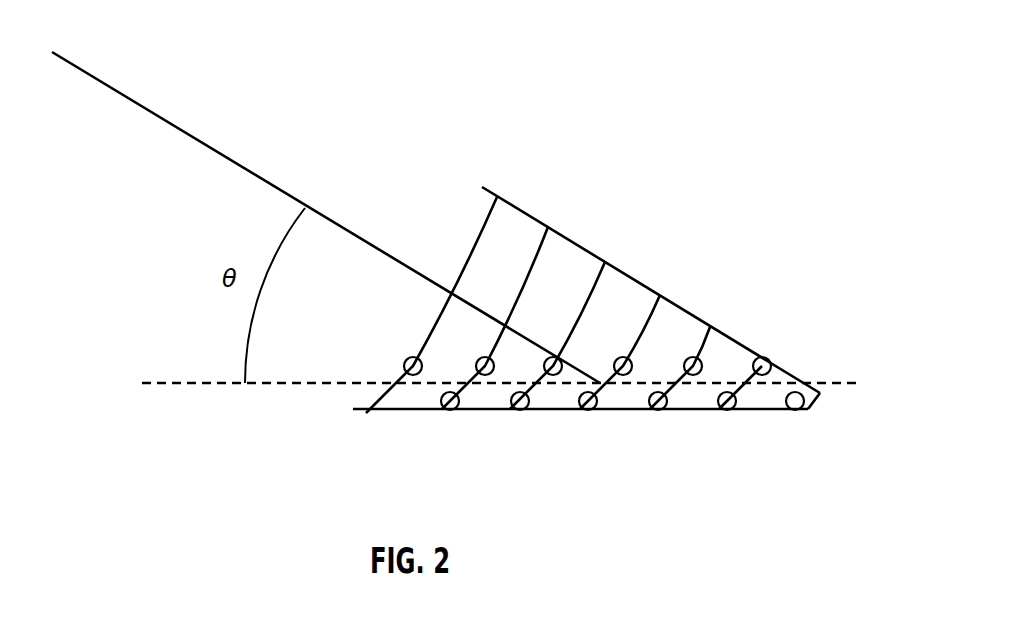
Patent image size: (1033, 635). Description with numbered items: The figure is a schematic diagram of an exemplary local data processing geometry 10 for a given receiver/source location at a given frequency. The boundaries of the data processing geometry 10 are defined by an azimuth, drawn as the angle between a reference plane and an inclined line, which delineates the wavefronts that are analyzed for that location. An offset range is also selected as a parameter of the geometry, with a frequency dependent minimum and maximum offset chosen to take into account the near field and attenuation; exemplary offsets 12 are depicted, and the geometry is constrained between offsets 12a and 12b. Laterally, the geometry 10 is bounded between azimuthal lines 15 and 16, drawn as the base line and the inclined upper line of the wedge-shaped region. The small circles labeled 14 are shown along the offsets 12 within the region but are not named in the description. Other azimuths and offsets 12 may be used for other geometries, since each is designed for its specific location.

The data processing geometry 10 is at (672, 156).
The offsets 12 is at (591, 282).
The offset 12a is at (817, 400).
The offset 12b is at (468, 262).
The pivot pin 14 is at (769, 361).
The azimuthal line 15 is at (618, 410).
The azimuthal line 16 is at (632, 275).